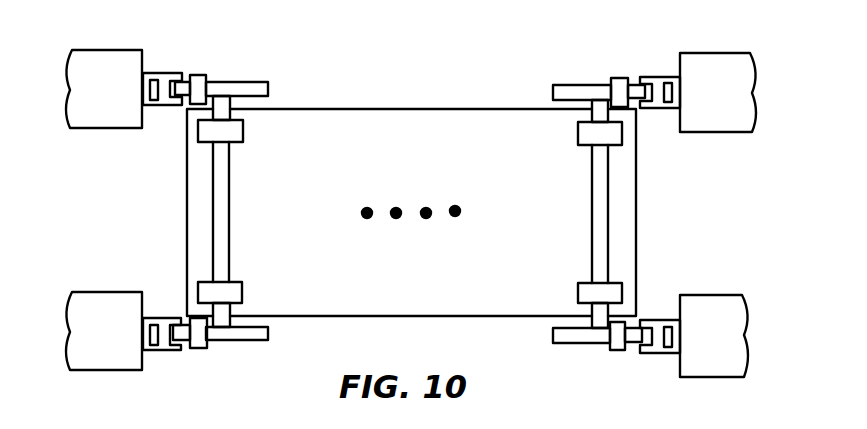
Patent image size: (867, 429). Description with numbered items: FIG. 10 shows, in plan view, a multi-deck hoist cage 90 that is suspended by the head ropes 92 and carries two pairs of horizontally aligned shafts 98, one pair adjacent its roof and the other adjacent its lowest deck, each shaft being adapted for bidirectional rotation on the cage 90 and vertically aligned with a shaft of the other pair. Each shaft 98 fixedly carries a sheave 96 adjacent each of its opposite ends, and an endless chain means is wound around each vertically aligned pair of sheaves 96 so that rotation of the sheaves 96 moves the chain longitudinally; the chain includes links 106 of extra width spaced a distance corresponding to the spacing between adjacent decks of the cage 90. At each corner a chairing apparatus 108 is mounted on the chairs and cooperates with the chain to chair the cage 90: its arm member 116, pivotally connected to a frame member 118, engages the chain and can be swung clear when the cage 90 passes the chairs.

The multi-deck hoist cage 90 is at (639, 221).
The head ropes 92 is at (370, 208).
The sheave 96 is at (268, 86).
The horizontally aligned shafts 98 is at (229, 168).
The links of extra width 106 is at (204, 76).
The chairing apparatus 108 is at (157, 123).
The arm member 116 is at (170, 72).
The frame member 118 is at (106, 53).